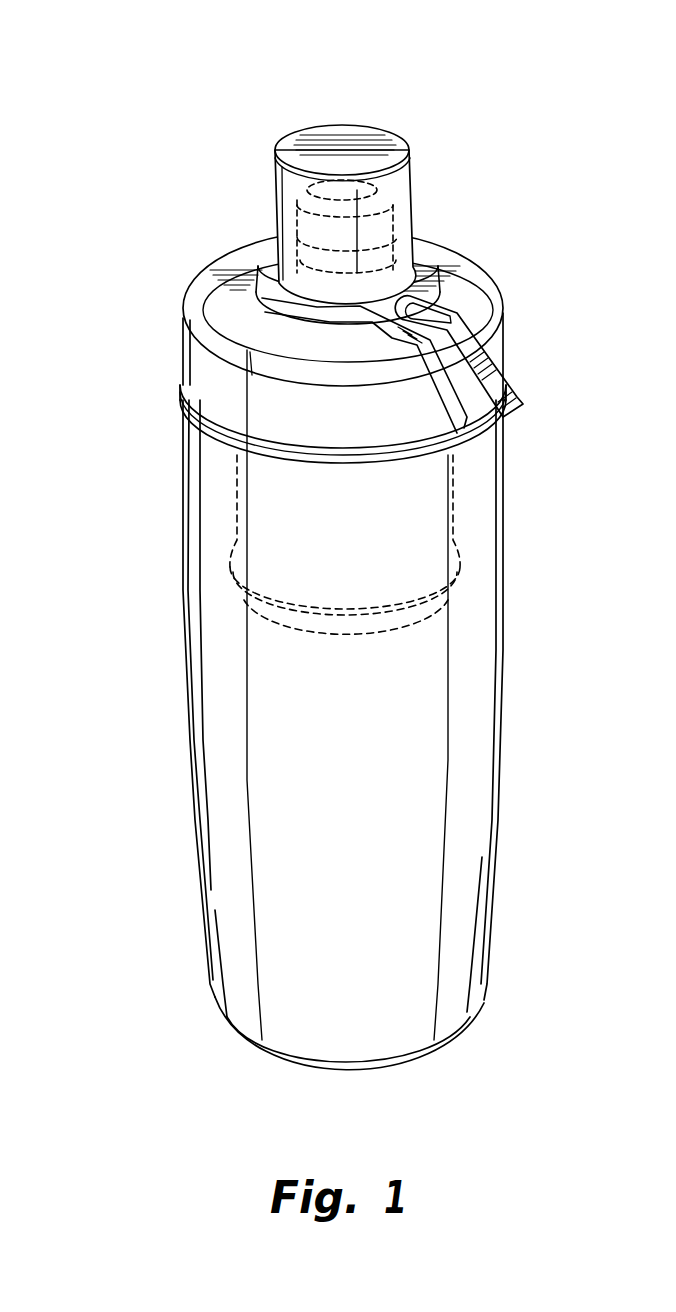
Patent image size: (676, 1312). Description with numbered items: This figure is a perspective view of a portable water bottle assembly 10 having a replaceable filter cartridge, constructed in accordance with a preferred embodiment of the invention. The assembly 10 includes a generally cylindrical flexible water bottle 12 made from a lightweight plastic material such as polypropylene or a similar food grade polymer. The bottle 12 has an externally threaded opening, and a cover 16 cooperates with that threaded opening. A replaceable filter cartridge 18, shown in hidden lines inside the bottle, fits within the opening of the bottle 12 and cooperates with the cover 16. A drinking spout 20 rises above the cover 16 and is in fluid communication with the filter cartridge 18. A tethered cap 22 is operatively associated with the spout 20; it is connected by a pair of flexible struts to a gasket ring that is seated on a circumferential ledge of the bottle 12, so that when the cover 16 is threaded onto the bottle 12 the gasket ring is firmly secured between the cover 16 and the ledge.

The water bottle assembly 10 is at (118, 175).
The water bottle 12 is at (193, 765).
The cover 16 is at (190, 360).
The replaceable filter cartridge 18 is at (370, 580).
The drinking spout 20 is at (323, 190).
The tethered cap 22 is at (418, 194).